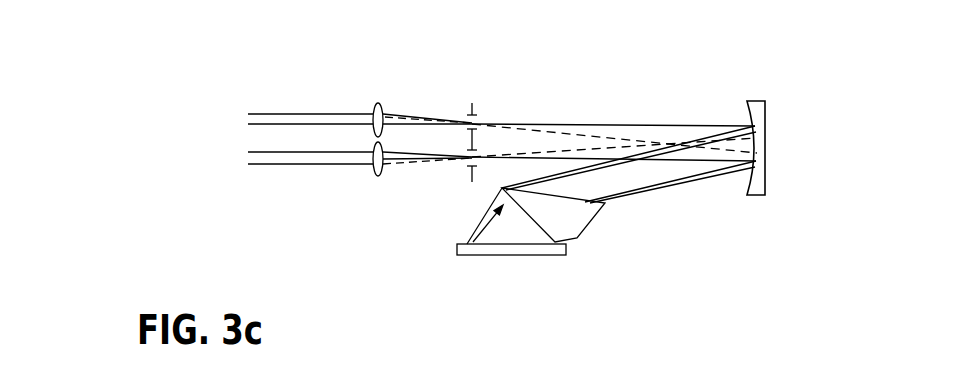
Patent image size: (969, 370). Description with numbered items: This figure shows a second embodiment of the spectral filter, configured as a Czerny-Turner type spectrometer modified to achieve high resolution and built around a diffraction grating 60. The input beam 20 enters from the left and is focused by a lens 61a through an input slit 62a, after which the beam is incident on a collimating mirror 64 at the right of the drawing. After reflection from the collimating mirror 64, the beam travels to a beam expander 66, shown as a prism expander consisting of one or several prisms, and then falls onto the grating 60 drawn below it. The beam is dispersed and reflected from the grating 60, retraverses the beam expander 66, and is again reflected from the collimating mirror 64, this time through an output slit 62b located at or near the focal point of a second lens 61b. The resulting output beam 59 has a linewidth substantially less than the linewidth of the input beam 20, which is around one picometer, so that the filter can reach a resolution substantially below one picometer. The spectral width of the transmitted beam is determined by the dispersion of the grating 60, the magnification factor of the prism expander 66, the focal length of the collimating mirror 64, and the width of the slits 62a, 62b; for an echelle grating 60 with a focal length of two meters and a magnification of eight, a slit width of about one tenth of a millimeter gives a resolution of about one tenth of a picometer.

The output beam 59 is at (265, 96).
The input beam 20 is at (270, 191).
The lens 61a is at (365, 184).
The lens 61b is at (372, 88).
The input slit 62a is at (460, 193).
The output slit 62b is at (481, 91).
The diffraction grating 60 is at (515, 255).
The collimating mirror 64 is at (765, 147).
The beam expander 66 is at (603, 210).